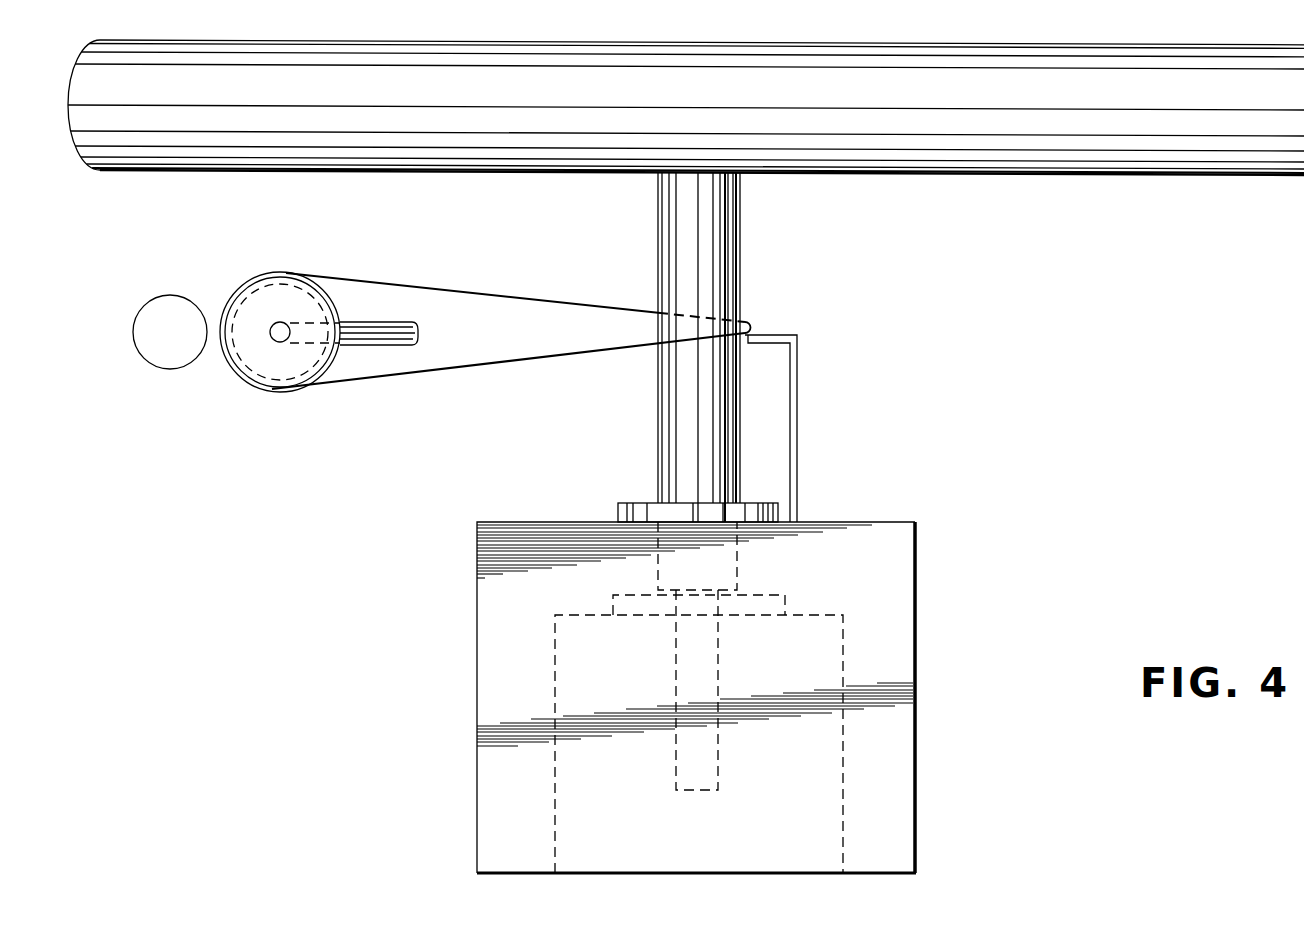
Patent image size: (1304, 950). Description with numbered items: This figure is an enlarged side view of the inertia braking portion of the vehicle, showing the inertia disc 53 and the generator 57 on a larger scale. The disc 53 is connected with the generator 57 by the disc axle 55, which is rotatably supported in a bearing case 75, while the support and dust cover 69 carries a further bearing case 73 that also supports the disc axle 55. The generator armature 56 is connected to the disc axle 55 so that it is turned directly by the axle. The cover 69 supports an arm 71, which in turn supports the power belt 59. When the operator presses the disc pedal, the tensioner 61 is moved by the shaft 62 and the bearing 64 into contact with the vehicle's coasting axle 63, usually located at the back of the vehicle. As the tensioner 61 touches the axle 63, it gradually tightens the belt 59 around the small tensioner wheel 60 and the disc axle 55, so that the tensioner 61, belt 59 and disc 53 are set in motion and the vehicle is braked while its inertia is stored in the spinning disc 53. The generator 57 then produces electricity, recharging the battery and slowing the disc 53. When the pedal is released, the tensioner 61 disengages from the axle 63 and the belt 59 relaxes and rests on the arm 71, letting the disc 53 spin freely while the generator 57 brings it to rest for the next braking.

The inertia disc 53 is at (1145, 158).
The disc axle 55 is at (727, 270).
The generator armature 56 is at (678, 692).
The generator 57 is at (835, 660).
The power belt 59 is at (502, 362).
The small tensioner wheel 60 is at (267, 285).
The tensioner 61 is at (252, 278).
The shaft 62 is at (388, 327).
The coasting axle 63 is at (148, 308).
The bearing 64 is at (277, 337).
The support and dust cover 69 is at (835, 538).
The arm 71 is at (798, 397).
The bearing case 73 is at (625, 508).
The bearing case 75 is at (633, 597).